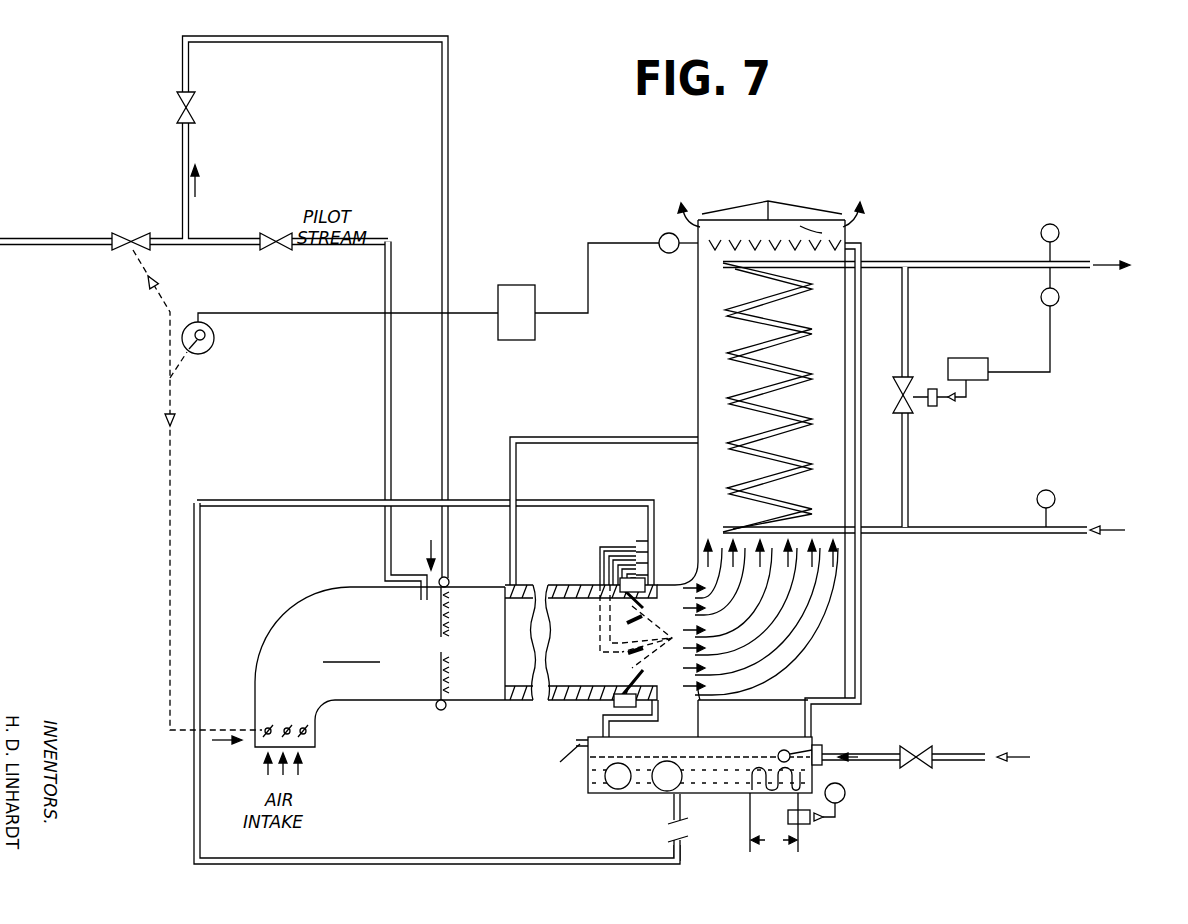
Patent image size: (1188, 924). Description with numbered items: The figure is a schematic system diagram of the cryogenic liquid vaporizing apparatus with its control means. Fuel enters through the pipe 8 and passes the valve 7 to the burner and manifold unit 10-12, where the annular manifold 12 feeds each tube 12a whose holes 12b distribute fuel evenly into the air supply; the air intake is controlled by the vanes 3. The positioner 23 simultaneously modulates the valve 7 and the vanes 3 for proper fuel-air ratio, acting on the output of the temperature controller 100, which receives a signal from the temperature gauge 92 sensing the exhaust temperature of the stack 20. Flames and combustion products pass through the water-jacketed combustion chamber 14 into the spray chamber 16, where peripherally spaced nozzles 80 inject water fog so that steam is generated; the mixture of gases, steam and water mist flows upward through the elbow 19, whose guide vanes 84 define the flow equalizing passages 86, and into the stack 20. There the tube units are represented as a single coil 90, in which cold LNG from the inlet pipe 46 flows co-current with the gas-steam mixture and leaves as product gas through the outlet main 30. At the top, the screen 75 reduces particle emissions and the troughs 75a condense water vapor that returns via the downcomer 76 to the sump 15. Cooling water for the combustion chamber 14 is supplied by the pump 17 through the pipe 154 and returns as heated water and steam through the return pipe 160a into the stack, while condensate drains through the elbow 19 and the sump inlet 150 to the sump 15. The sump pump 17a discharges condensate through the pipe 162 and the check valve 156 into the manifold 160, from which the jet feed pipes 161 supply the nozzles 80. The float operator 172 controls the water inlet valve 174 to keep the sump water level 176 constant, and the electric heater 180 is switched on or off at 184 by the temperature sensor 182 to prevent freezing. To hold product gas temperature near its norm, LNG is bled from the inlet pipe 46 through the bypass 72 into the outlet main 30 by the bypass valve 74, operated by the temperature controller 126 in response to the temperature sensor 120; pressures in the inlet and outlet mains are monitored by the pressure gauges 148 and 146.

The vanes 3 is at (310, 733).
The valve 7 is at (136, 234).
The pipe 8 is at (2, 252).
The unit 10-12 is at (380, 667).
The annular manifold 12 is at (441, 710).
The tube 12a is at (440, 617).
The holes 12b is at (447, 620).
The combustion chamber 14 is at (587, 586).
The sump 15 is at (719, 742).
The spray chamber 16 is at (675, 602).
The pump 17 is at (605, 790).
The sump pump 17a is at (665, 761).
The elbow 19 is at (846, 621).
The stack 20 is at (690, 412).
The positioner 23 is at (214, 344).
The outlet main 30 is at (999, 268).
The inlet pipe 46 is at (1030, 536).
The bypass 72 is at (909, 472).
The bypass valve 74 is at (912, 405).
The screen 75 is at (733, 233).
The troughs 75a is at (822, 233).
The downcomer 76 is at (864, 581).
The nozzles 80 is at (600, 640).
The guide vanes 84 is at (775, 640).
The flow equalizing passages 86 is at (700, 699).
The coil 90 is at (742, 387).
The temperature gauge 92 is at (663, 234).
The temperature controller 100 is at (528, 278).
The temperature sensor 120 is at (1060, 300).
The temperature controller 126 is at (988, 383).
The pressure gauge 146 is at (1056, 230).
The pressure gauge 148 is at (1056, 492).
The sump inlet 150 is at (699, 712).
The pipe 154 is at (586, 741).
The check valve 156 is at (672, 824).
The manifold 160 is at (654, 510).
The return pipe 160a is at (606, 436).
The jet feed pipes 161 is at (628, 547).
The pipe 162 is at (201, 614).
The float operator 172 is at (824, 746).
The water inlet valve 174 is at (931, 756).
The sump water level 176 is at (750, 757).
The electric heater 180 is at (771, 786).
The temperature sensor 182 is at (845, 795).
The switch 184 is at (800, 824).